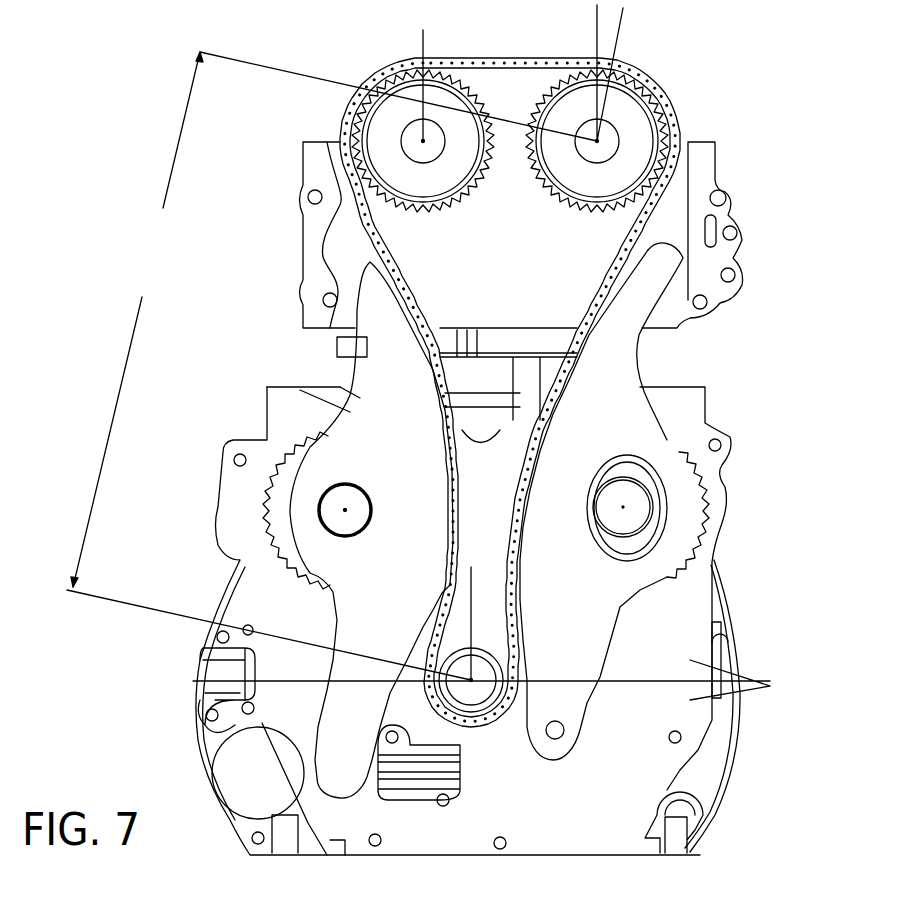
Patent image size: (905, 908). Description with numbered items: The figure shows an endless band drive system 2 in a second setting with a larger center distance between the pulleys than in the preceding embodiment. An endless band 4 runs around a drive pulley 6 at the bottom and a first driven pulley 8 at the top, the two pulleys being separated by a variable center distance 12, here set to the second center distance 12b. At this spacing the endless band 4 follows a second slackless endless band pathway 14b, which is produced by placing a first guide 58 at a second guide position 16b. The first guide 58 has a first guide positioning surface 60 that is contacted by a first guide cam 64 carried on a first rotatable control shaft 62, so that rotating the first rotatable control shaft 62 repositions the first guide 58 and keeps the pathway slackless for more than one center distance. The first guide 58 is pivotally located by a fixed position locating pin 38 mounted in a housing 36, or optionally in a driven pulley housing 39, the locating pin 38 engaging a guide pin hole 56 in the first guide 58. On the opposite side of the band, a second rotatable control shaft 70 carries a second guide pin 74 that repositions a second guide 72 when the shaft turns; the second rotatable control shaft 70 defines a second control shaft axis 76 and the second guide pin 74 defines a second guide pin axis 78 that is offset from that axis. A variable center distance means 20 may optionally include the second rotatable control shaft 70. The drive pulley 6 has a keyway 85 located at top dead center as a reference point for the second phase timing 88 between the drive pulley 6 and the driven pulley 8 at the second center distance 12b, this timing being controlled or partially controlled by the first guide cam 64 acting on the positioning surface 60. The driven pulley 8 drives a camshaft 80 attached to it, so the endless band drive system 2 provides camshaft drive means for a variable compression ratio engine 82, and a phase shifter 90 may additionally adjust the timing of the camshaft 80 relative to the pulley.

The endless band drive system 2 is at (785, 395).
The endless band 4 is at (363, 213).
The drive pulley 6 is at (498, 693).
The first driven pulley 8 is at (580, 177).
The variable center distance 12 is at (363, 136).
The second center distance 12b is at (269, 460).
The second slackless endless band pathway 14b is at (373, 241).
The second guide position 16b is at (622, 394).
The variable center distance means 20 is at (752, 598).
The housing 36 is at (504, 662).
The locating pin 38 is at (563, 727).
The driven pulley housing 39 is at (705, 267).
The guide pin hole 56 is at (562, 735).
The first guide 58 is at (628, 600).
The first guide positioning surface 60 is at (597, 513).
The first rotatable control shaft 62 is at (637, 505).
The first guide cam 64 is at (622, 473).
The second rotatable control shaft 70 is at (328, 508).
The second guide 72 is at (391, 628).
The second guide pin 74 is at (333, 493).
The second control shaft axis 76 is at (346, 509).
The second guide pin axis 78 is at (343, 510).
The camshaft 80 is at (610, 123).
The variable compression ratio engine 82 is at (780, 205).
The keyway 85 is at (487, 647).
The second phase timing 88 is at (648, 20).
The phase shifter 90 is at (635, 133).